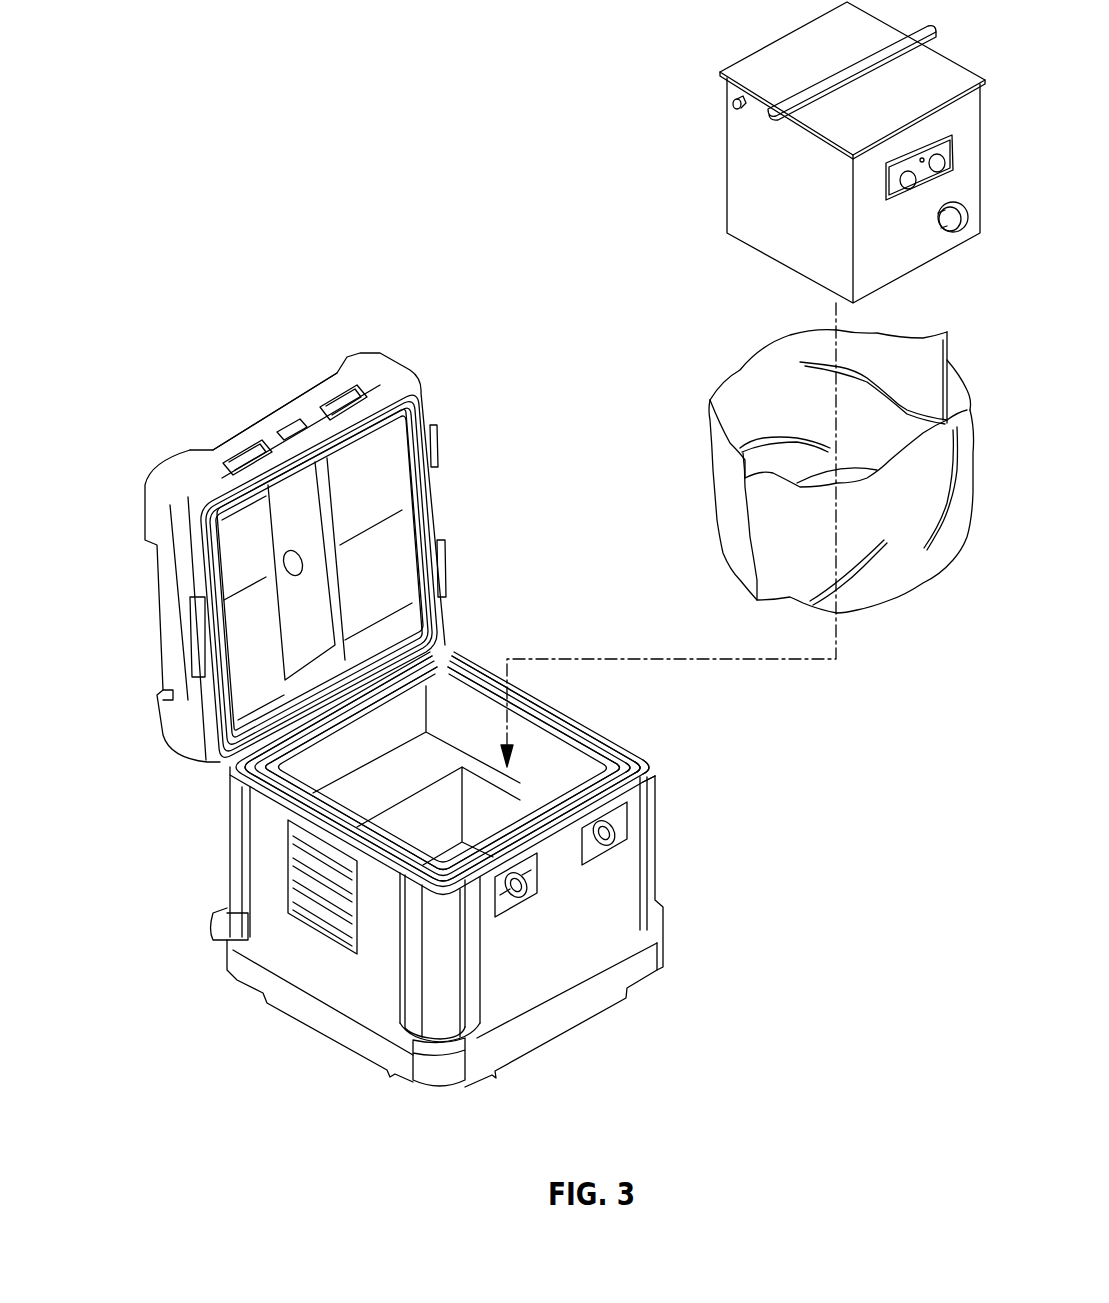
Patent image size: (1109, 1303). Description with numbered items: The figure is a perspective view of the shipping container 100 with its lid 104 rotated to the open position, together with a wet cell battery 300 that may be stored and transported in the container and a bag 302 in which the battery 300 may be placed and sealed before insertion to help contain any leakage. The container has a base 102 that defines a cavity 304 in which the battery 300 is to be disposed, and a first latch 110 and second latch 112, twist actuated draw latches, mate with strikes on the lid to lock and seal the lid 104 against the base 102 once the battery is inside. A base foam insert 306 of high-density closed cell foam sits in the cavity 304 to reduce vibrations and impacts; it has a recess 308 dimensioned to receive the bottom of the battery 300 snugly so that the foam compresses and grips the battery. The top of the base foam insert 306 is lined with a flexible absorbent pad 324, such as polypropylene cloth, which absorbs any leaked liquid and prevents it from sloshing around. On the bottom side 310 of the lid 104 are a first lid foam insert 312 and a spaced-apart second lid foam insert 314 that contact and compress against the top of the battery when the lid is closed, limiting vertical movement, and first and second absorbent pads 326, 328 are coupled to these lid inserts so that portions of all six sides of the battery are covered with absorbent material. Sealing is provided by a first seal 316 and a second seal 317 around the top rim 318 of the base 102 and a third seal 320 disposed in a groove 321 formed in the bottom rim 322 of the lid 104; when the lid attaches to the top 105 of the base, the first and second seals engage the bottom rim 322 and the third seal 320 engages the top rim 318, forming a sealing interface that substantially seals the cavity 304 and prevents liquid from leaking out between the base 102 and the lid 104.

The container 100 is at (192, 412).
The base 102 is at (275, 890).
The lid 104 is at (177, 598).
The top 105 is at (653, 770).
The first latch 110 is at (520, 907).
The second latch 112 is at (613, 850).
The wet cell battery 300 is at (750, 173).
The bag 302 is at (765, 392).
The cavity 304 is at (557, 737).
The base foam insert 306 is at (443, 760).
The recess 308 is at (430, 826).
The bottom side 310 is at (295, 493).
The first lid foam insert 312 is at (383, 517).
The second lid foam insert 314 is at (235, 555).
The first seal 316 is at (643, 760).
The second seal 317 is at (637, 750).
The top rim 318 is at (650, 777).
The third seal 320 is at (413, 390).
The groove 321 is at (413, 418).
The bottom rim 322 is at (430, 440).
The absorbent pad 324 is at (470, 760).
The first absorbent pad 326 is at (387, 567).
The second absorbent pad 328 is at (237, 585).